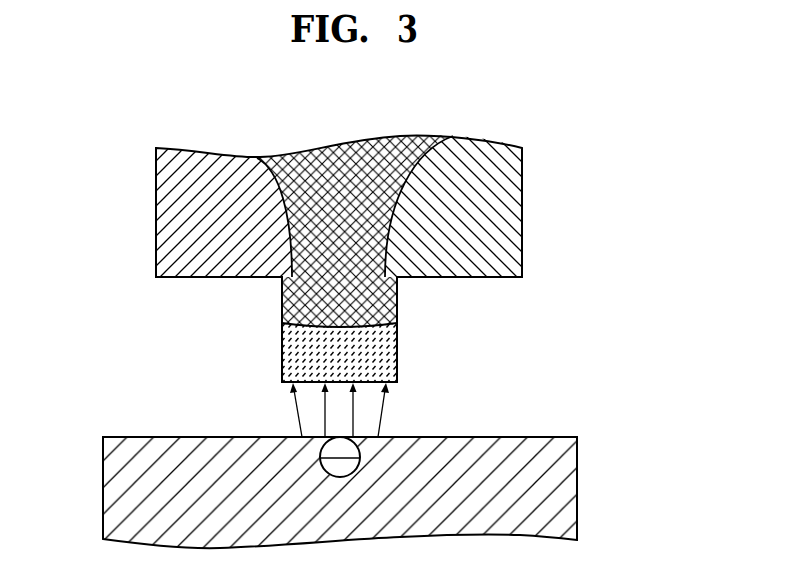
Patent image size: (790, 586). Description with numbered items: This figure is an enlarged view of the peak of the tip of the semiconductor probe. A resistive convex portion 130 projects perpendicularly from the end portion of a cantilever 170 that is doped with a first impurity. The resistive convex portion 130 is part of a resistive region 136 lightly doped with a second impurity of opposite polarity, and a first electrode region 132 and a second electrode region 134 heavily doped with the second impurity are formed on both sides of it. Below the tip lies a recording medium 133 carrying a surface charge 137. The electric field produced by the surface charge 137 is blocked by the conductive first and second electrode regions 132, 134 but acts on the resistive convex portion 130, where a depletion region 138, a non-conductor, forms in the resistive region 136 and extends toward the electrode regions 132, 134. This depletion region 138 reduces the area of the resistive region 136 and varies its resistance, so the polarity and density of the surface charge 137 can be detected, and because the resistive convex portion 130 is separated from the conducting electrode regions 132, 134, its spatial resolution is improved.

The cantilever 170 is at (555, 171).
The first electrode region 132 is at (168, 223).
The second electrode region 134 is at (503, 218).
The resistive convex portion 130 is at (398, 302).
The resistive region 136 is at (282, 296).
The depletion region 138 is at (290, 348).
The recording medium 133 is at (565, 482).
The surface charge 137 is at (358, 438).